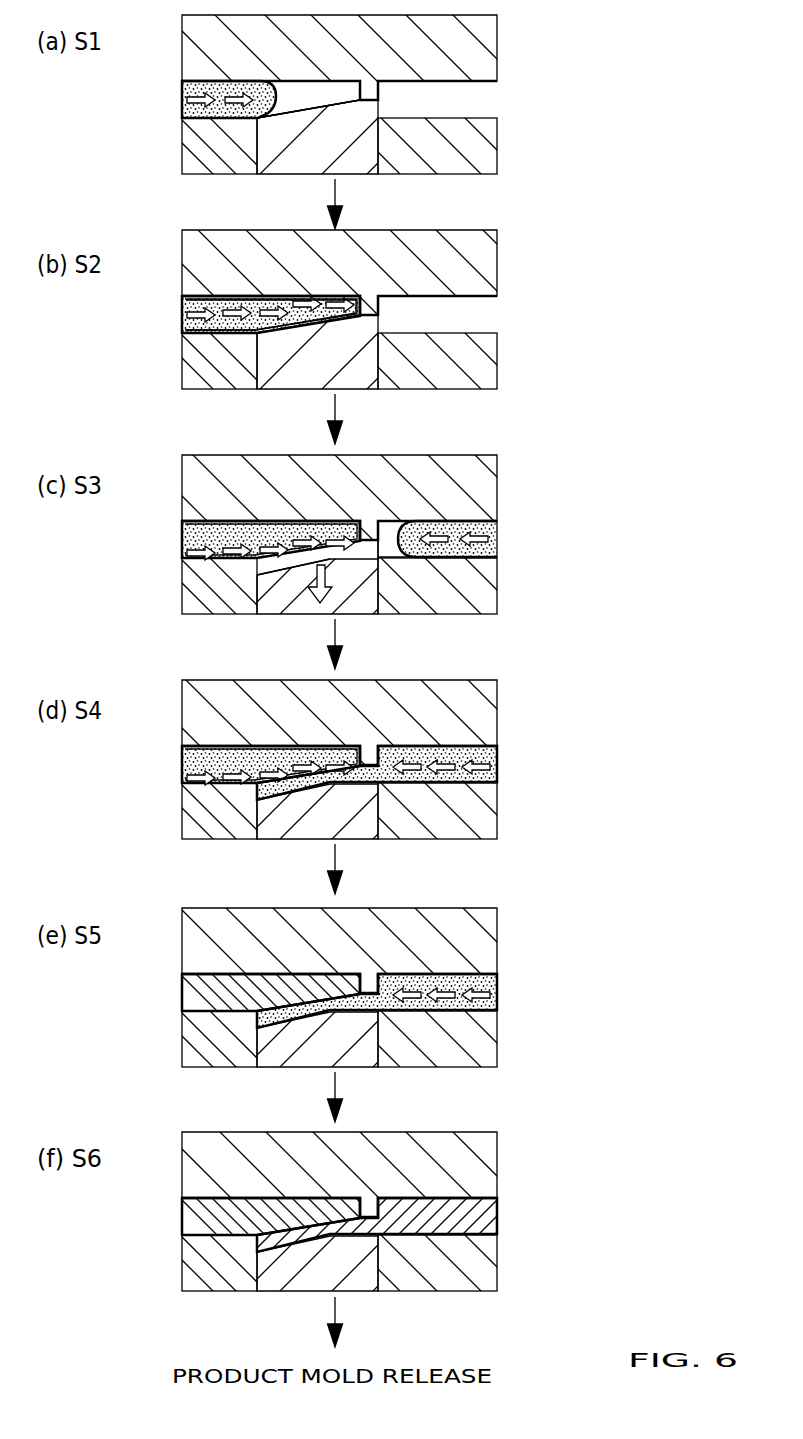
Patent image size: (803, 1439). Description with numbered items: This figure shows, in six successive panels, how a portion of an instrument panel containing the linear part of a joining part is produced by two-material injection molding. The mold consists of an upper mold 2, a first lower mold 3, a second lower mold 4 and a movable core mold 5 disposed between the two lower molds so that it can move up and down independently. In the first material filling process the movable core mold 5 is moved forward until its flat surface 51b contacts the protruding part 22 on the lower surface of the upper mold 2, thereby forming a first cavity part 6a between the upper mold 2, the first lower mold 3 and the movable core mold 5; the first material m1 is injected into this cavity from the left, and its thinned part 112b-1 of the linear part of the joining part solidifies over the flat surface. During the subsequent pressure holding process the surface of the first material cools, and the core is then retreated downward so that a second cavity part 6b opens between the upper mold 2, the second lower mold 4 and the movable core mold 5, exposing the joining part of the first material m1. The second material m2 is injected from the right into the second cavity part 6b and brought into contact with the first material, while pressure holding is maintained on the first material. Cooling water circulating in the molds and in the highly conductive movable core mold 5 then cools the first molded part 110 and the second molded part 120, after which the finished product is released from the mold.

The upper mold 2 is at (482, 55).
The first lower mold 3 is at (190, 145).
The second lower mold 4 is at (482, 165).
The movable core mold 5 is at (272, 167).
The flat surface 51b is at (343, 100).
The first cavity part 6a is at (293, 90).
The second cavity part 6b is at (390, 545).
The protruding part 22 is at (367, 90).
The first material m1 is at (182, 109).
The second material m2 is at (493, 545).
The first molded part 110 is at (197, 995).
The thinned part of the linear part of the joining part 112b-1 is at (347, 297).
The second molded part 120 is at (482, 1221).